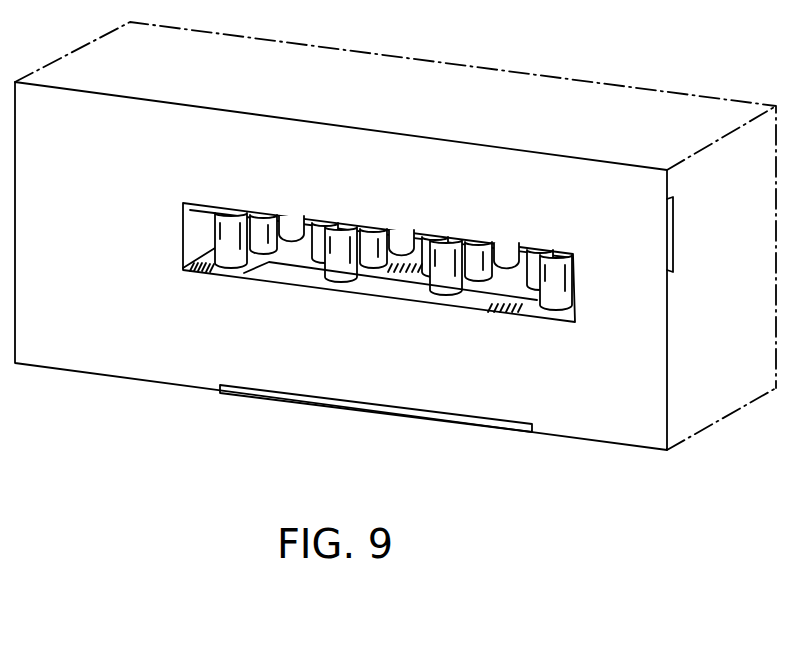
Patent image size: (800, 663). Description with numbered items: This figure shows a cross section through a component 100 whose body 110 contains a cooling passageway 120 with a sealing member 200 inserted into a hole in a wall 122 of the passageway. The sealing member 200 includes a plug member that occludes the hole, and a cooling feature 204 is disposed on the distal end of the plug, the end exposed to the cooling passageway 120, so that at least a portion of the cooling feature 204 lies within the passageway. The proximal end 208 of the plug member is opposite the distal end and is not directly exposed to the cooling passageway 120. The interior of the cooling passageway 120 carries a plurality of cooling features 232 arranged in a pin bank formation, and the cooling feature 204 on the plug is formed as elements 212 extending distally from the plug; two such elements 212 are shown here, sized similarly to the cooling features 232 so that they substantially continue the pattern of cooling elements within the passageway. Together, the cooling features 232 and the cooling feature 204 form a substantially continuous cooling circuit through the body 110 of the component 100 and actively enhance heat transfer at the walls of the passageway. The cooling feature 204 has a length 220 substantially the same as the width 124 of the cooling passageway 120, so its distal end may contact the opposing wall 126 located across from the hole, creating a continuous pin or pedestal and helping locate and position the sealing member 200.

The component 100 is at (126, 402).
The body 110 is at (123, 160).
The cooling passageway 120 is at (294, 252).
The wall 122 is at (545, 312).
The width 124 is at (167, 200).
The opposing wall 126 is at (300, 196).
The sealing member 200 is at (371, 366).
The cooling feature 204 is at (346, 228).
The proximal end 208 is at (412, 423).
The element 212 is at (402, 291).
The length 220 is at (472, 302).
The cooling feature 232 is at (235, 228).